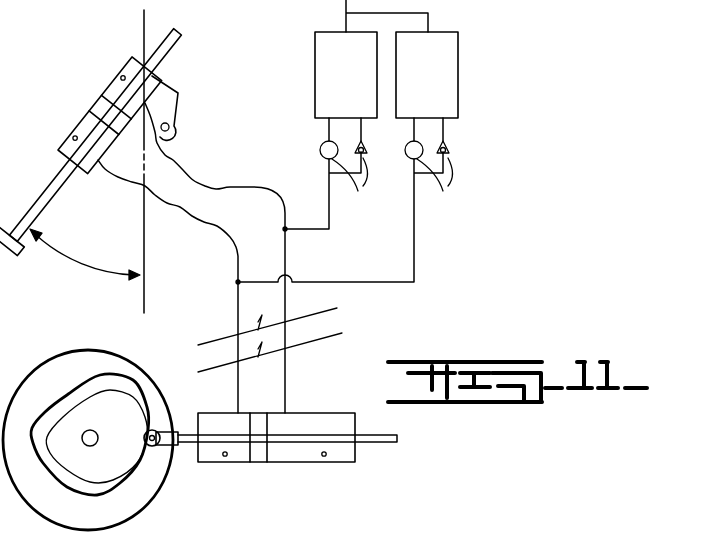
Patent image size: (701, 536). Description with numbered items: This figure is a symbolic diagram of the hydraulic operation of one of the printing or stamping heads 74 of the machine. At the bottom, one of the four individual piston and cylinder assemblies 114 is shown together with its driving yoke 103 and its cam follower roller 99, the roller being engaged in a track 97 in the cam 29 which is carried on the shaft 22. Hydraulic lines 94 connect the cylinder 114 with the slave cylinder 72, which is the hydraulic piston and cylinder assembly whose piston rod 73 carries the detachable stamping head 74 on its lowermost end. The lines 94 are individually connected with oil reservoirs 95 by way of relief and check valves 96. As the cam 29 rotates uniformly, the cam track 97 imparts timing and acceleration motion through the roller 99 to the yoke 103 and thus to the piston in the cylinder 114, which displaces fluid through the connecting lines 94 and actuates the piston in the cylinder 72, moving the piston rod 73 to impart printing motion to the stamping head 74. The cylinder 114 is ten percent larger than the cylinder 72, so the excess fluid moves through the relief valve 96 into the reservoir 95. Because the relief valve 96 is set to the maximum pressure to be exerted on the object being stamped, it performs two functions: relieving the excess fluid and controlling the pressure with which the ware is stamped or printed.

The shaft 22 is at (94, 431).
The cam 29 is at (101, 518).
The hydraulic piston and cylinder assembly 72 is at (80, 122).
The piston rod 73 is at (53, 186).
The stamping head 74 is at (18, 267).
The hydraulic lines 94 is at (103, 163).
The oil reservoirs 95 is at (323, 93).
The relief and check valves 96 is at (355, 201).
The cam track 97 is at (139, 396).
The cam follower roller 99 is at (153, 449).
The driving yoke 103 is at (190, 446).
The piston and cylinder assembly 114 is at (297, 413).